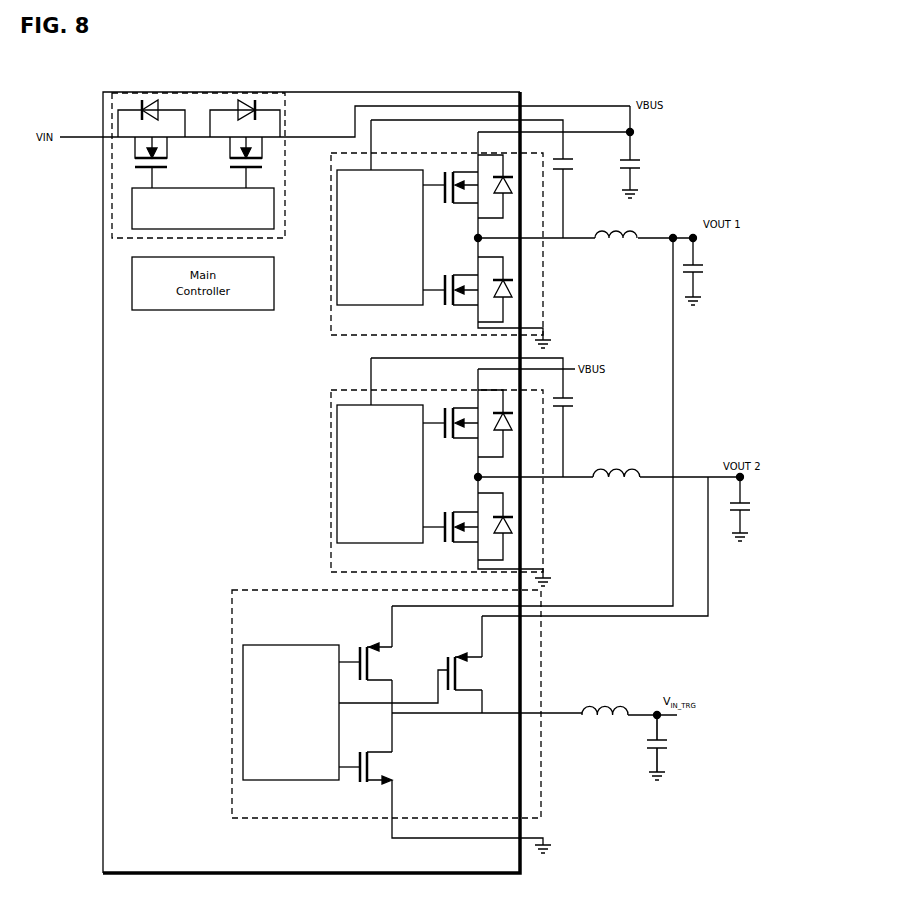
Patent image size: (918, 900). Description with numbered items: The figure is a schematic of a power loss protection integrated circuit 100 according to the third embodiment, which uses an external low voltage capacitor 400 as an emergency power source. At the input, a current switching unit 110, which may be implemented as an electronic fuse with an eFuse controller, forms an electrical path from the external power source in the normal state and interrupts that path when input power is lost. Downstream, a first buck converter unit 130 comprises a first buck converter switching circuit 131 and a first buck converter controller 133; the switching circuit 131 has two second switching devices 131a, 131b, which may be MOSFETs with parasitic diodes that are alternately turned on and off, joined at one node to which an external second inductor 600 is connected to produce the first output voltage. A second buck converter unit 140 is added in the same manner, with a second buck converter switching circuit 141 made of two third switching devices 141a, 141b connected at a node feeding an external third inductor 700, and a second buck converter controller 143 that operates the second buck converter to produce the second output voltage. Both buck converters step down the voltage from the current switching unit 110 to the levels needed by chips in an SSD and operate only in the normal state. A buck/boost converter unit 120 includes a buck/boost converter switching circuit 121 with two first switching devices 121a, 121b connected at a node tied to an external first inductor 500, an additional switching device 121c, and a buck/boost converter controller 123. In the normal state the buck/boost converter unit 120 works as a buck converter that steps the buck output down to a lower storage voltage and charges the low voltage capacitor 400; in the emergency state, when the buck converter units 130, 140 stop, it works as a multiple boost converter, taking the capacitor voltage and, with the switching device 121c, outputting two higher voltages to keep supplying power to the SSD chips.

The power loss protection integrated circuit 100 is at (326, 85).
The current switching unit 110 is at (112, 220).
The buck/boost converter unit 120 is at (407, 729).
The buck/boost converter switching circuit 121 is at (383, 708).
The first switching device 121a is at (357, 648).
The first switching device 121b is at (357, 781).
The switching device 121c is at (457, 694).
The buck/boost converter controller 123 is at (262, 782).
The first buck converter unit 130 is at (412, 234).
The first buck converter switching circuit 131 is at (441, 231).
The second switching device 131a is at (443, 172).
The second switching device 131b is at (443, 300).
The first buck converter controller 133 is at (337, 283).
The second buck converter unit 140 is at (412, 472).
The second buck converter switching circuit 141 is at (441, 467).
The third switching device 141a is at (443, 407).
The third switching device 141b is at (443, 538).
The second buck converter controller 143 is at (337, 443).
The low voltage capacitor 400 is at (670, 745).
The first inductor 500 is at (630, 705).
The second inductor 600 is at (640, 232).
The third inductor 700 is at (622, 462).